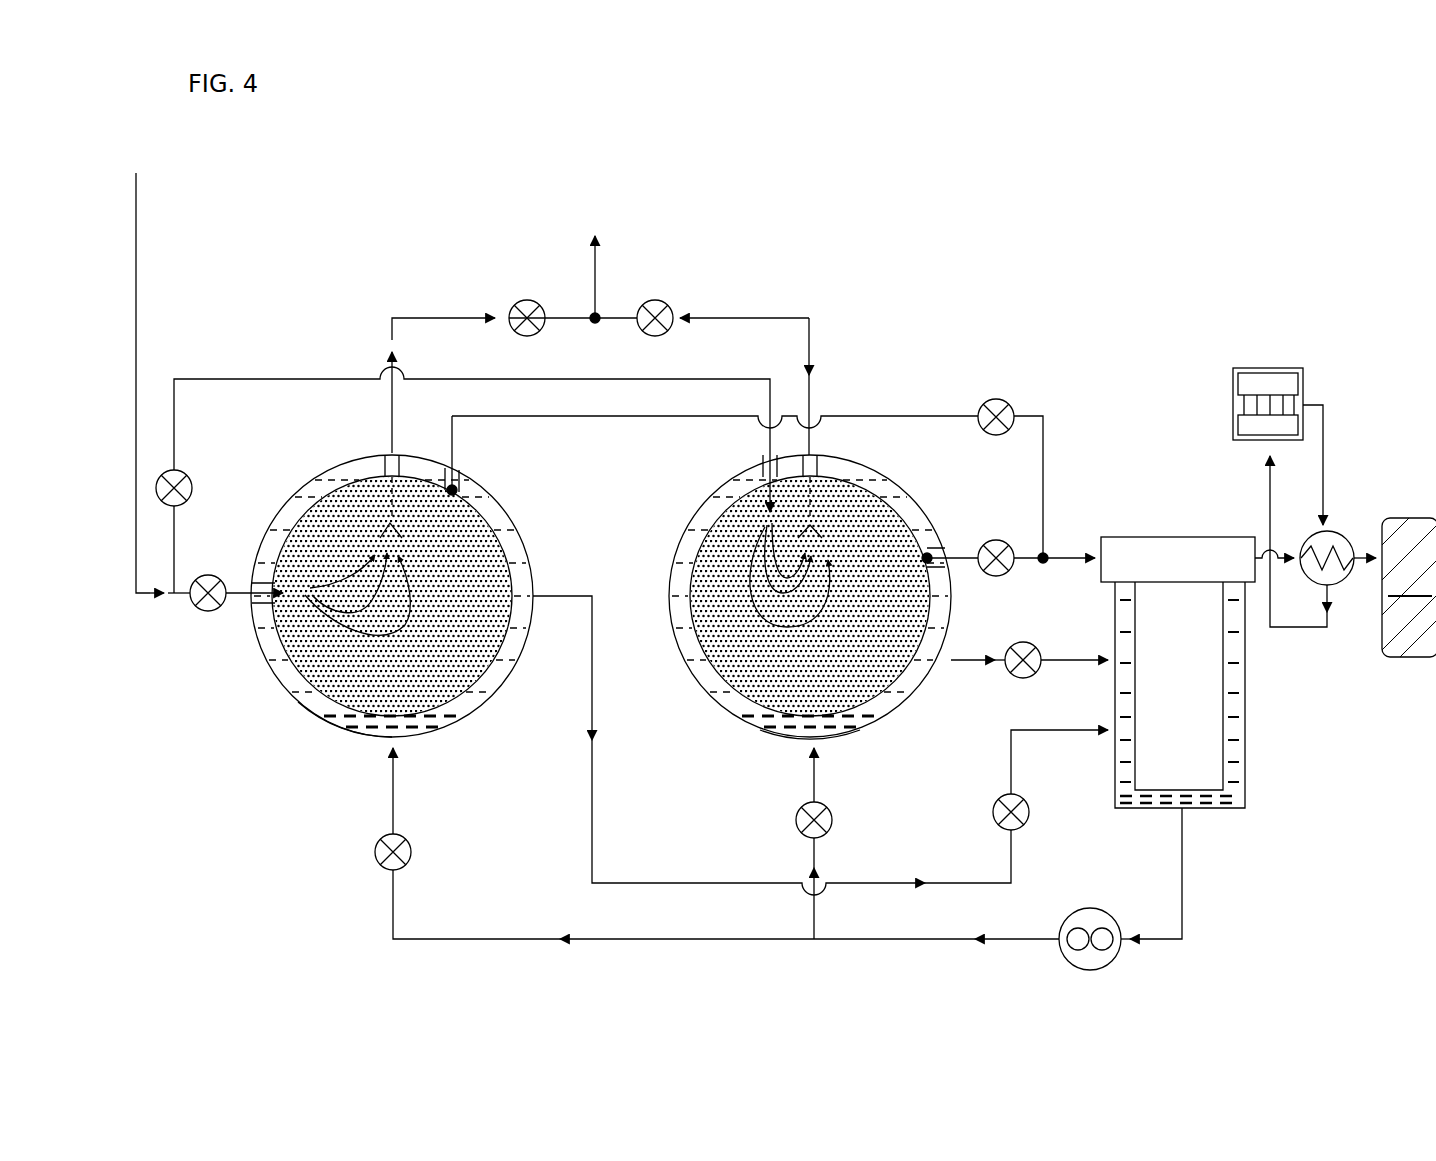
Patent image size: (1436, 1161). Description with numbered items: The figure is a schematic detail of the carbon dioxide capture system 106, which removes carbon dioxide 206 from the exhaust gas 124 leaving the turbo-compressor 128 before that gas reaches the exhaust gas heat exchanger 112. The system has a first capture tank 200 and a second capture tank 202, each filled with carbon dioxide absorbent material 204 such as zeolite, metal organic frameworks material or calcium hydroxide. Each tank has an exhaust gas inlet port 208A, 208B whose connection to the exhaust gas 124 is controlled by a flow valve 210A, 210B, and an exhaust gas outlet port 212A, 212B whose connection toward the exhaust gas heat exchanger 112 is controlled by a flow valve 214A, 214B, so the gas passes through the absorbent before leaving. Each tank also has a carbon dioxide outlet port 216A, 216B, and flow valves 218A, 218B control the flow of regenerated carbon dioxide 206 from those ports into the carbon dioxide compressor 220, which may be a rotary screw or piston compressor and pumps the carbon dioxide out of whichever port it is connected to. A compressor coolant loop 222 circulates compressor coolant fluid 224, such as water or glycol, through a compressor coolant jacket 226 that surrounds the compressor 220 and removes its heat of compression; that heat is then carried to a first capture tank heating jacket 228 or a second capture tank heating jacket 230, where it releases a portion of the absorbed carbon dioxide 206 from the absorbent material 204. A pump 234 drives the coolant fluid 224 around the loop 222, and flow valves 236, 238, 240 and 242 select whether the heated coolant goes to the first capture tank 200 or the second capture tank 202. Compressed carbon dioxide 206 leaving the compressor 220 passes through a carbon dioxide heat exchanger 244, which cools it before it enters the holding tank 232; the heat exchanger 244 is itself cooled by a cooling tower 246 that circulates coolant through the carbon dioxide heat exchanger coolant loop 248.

The carbon dioxide capture system 106 is at (1050, 282).
The exhaust gas heat exchanger 112 is at (654, 255).
The exhaust gas 124 is at (140, 232).
The turbo-compressor 128 is at (299, 221).
The first capture tank 200 is at (328, 735).
The second capture tank 202 is at (718, 712).
The carbon dioxide absorbent material 204 is at (438, 672).
The carbon dioxide 206 is at (1045, 462).
The exhaust gas inlet port 208A is at (258, 588).
The exhaust gas inlet port 208B is at (765, 458).
The flow valve 210A is at (210, 612).
The flow valve 210B is at (191, 486).
The exhaust gas outlet port 212A is at (382, 455).
The exhaust gas outlet port 212B is at (817, 458).
The flow valve 214A is at (513, 305).
The flow valve 214B is at (668, 306).
The carbon dioxide outlet port 216A is at (458, 480).
The carbon dioxide outlet port 216B is at (930, 553).
The flow valve 218A is at (998, 399).
The flow valve 218B is at (990, 576).
The carbon dioxide compressor 220 is at (1152, 537).
The compressor coolant loop 222 is at (987, 665).
The compressor coolant fluid 224 is at (443, 732).
The compressor coolant jacket 226 is at (1248, 774).
The first capture tank heating jacket 228 is at (298, 702).
The second capture tank heating jacket 230 is at (788, 737).
The holding tank 232 is at (1428, 517).
The pump 234 is at (1078, 910).
The flow valve 236 is at (411, 855).
The flow valve 238 is at (1028, 815).
The flow valve 240 is at (797, 820).
The flow valve 242 is at (1028, 645).
The carbon dioxide heat exchanger 244 is at (1318, 534).
The cooling tower 246 is at (1262, 368).
The carbon dioxide heat exchanger coolant loop 248 is at (1270, 496).